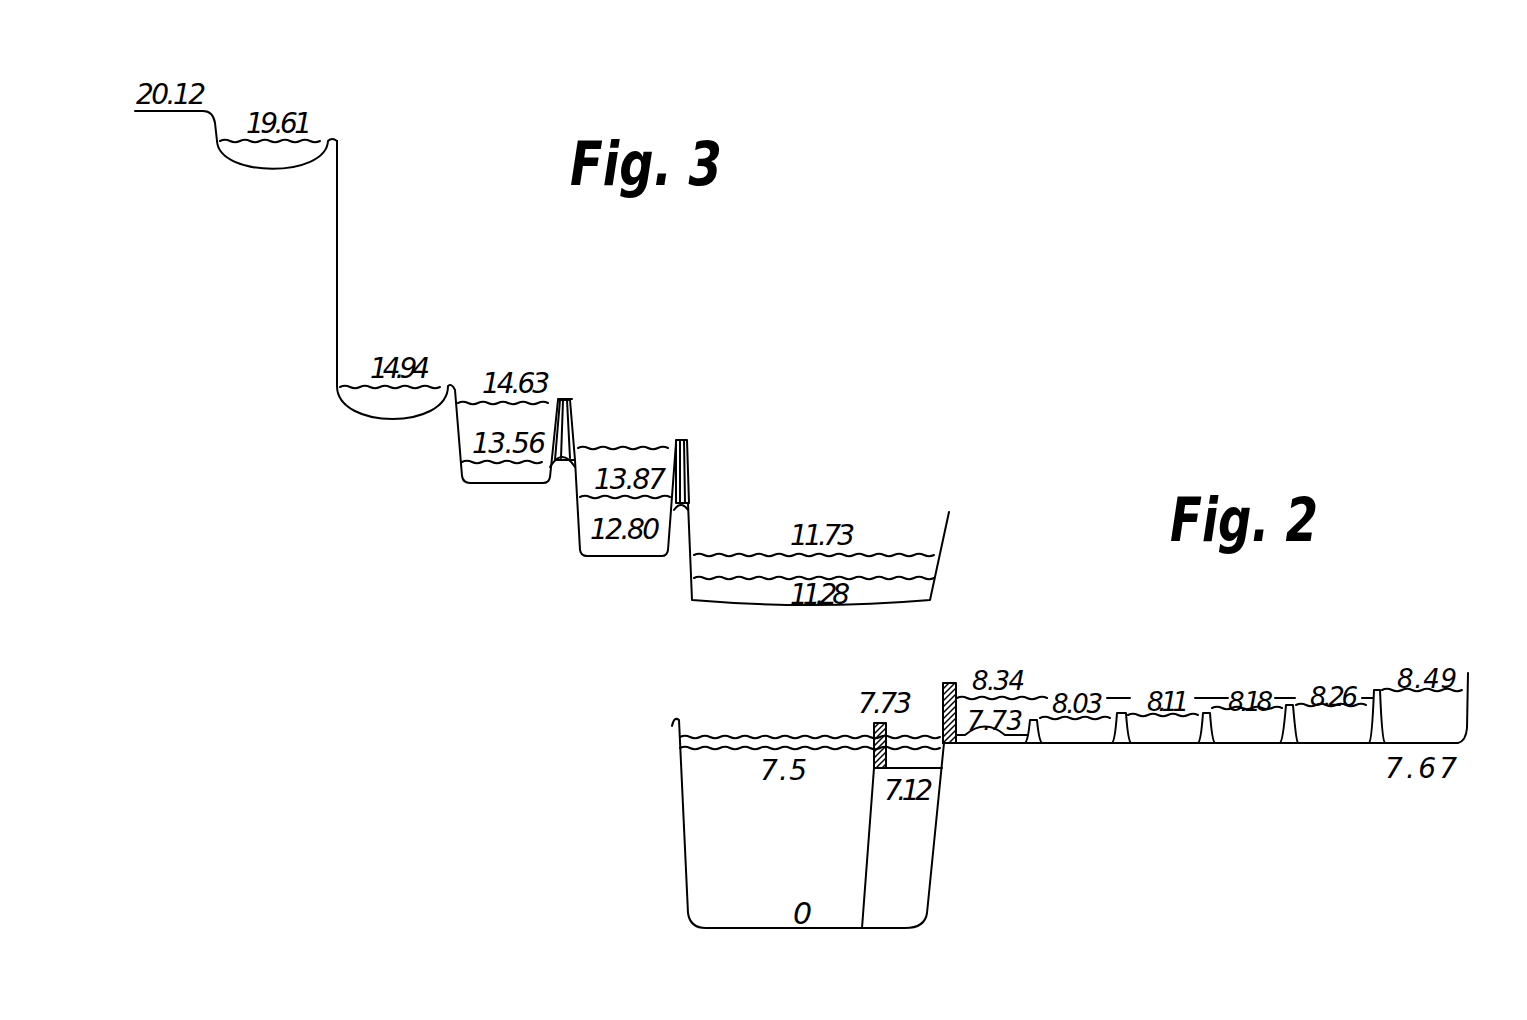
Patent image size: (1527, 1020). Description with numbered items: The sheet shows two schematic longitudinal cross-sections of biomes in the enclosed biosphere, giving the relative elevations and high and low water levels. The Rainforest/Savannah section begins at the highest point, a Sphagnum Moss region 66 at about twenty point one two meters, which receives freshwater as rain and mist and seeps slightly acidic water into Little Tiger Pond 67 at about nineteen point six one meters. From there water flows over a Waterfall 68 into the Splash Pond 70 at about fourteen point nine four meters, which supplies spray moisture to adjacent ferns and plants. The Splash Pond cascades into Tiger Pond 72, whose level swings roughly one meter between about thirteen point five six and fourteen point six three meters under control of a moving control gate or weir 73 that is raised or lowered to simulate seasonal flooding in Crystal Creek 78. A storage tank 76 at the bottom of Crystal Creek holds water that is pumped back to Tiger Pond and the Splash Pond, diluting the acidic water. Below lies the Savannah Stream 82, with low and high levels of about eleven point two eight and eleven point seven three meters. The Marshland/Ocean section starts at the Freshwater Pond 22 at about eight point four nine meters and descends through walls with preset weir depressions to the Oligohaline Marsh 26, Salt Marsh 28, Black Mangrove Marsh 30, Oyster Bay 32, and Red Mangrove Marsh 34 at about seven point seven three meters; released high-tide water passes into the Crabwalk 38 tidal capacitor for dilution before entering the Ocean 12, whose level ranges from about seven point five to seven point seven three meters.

In FIG. 2, the Ocean 12 is at (715, 737).
In FIG. 2, the Freshwater Pond 22 is at (1378, 690).
In FIG. 2, the Oligohaline Marsh 26 is at (1290, 705).
In FIG. 2, the Salt Marsh 28 is at (1205, 713).
In FIG. 2, the Black Mangrove Marsh 30 is at (1118, 713).
In FIG. 2, the Oyster Bay 32 is at (1031, 720).
In FIG. 2, the Red Mangrove Marsh 34 is at (1000, 733).
In FIG. 2, the Crabwalk tidal capacitor 38 is at (943, 757).
In FIG. 3, the Sphagnum Moss region 66 is at (207, 113).
In FIG. 3, the Little Tiger Pond 67 is at (320, 140).
In FIG. 3, the Waterfall 68 is at (337, 224).
In FIG. 3, the Splash Pond 70 is at (435, 385).
In FIG. 3, the Tiger Pond 72 is at (560, 400).
In FIG. 3, the moving control gate or weir 73 is at (575, 404).
In FIG. 3, the storage tank 76 is at (690, 445).
In FIG. 3, the Crystal Creek 78 is at (598, 448).
In FIG. 3, the Savannah Stream 82 is at (883, 555).